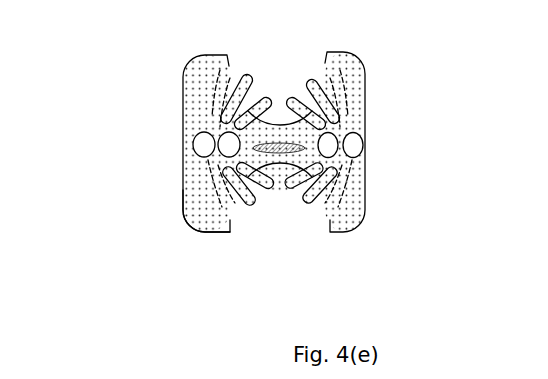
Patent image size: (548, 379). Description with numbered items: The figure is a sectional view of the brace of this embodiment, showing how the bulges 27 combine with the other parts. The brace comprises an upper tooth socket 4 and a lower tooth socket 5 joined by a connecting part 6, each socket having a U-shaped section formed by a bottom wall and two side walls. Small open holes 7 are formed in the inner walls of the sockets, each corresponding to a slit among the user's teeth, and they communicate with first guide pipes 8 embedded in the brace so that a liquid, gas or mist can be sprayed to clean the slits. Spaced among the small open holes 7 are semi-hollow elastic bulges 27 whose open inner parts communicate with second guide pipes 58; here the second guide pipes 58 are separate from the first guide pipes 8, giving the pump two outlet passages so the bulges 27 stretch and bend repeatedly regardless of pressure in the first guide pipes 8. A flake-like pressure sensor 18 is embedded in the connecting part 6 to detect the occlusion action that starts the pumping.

The upper tooth socket 4 is at (187, 81).
The lower tooth socket 5 is at (200, 207).
The connecting part 6 is at (260, 130).
The small open holes 7 is at (235, 213).
The first guide pipes 8 is at (345, 144).
The pressure sensor 18 is at (355, 131).
The bulges 27 is at (253, 88).
The second guide pipes 58 is at (322, 148).